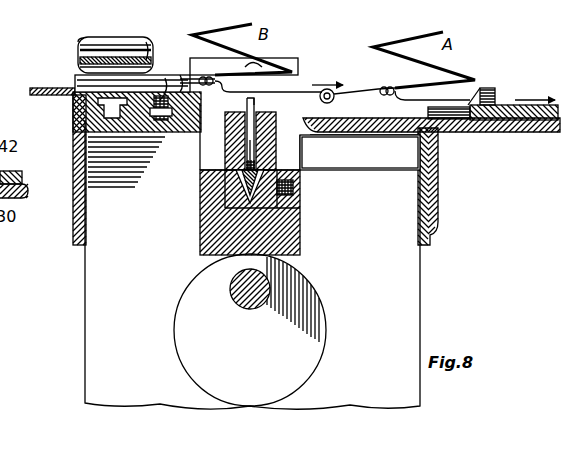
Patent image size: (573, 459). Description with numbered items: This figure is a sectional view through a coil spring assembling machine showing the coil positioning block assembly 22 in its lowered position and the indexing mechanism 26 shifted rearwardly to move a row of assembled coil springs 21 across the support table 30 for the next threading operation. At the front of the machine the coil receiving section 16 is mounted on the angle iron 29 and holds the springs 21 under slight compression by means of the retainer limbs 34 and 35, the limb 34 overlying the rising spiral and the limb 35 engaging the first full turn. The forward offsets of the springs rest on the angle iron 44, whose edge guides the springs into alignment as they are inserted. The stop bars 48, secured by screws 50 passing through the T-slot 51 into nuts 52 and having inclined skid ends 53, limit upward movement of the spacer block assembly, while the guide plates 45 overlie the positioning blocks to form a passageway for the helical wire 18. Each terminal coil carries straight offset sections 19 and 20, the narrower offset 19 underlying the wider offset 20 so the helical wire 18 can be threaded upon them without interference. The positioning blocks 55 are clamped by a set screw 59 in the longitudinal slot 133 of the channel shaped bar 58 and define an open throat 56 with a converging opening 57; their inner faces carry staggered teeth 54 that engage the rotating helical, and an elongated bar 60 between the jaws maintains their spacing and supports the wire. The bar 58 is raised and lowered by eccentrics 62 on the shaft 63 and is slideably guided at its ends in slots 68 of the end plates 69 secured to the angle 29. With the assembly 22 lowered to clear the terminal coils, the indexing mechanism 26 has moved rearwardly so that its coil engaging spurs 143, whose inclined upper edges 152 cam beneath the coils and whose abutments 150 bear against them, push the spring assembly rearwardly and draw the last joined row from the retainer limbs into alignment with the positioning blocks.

The coil receiving section 16 is at (107, 36).
The helical wire 18 is at (325, 89).
The straight offset section 19 is at (166, 78).
The straight offset section 20 is at (522, 104).
The coil spring 21 is at (245, 24).
The coil positioning block assembly 22 is at (278, 160).
The indexing mechanism 26 is at (500, 88).
The angle iron 29 is at (78, 216).
The support table 30 is at (540, 132).
The retainer limb 34 is at (142, 58).
The retainer limb 35 is at (88, 41).
The angle iron 44 is at (45, 95).
The guide plate 45 is at (292, 62).
The stop bar 48 is at (128, 112).
The screw 50 is at (184, 74).
The T-slot 51 is at (190, 118).
The nut 52 is at (162, 118).
The inclined end 53 is at (90, 82).
The teeth 54 is at (266, 152).
The positioning block 55 is at (232, 138).
The open throat 56 is at (252, 112).
The converging opening 57 is at (246, 122).
The channel shaped bar 58 is at (290, 228).
The set screw 59 is at (295, 190).
The elongated bar 60 is at (236, 180).
The eccentric 62 is at (310, 358).
The shaft 63 is at (242, 306).
The slot 68 is at (300, 164).
The end plate 69 is at (420, 290).
The longitudinal slot 133 is at (287, 206).
The coil engaging spur 143 is at (490, 88).
The abutment 150 is at (524, 104).
The inclined upper edge 152 is at (438, 112).